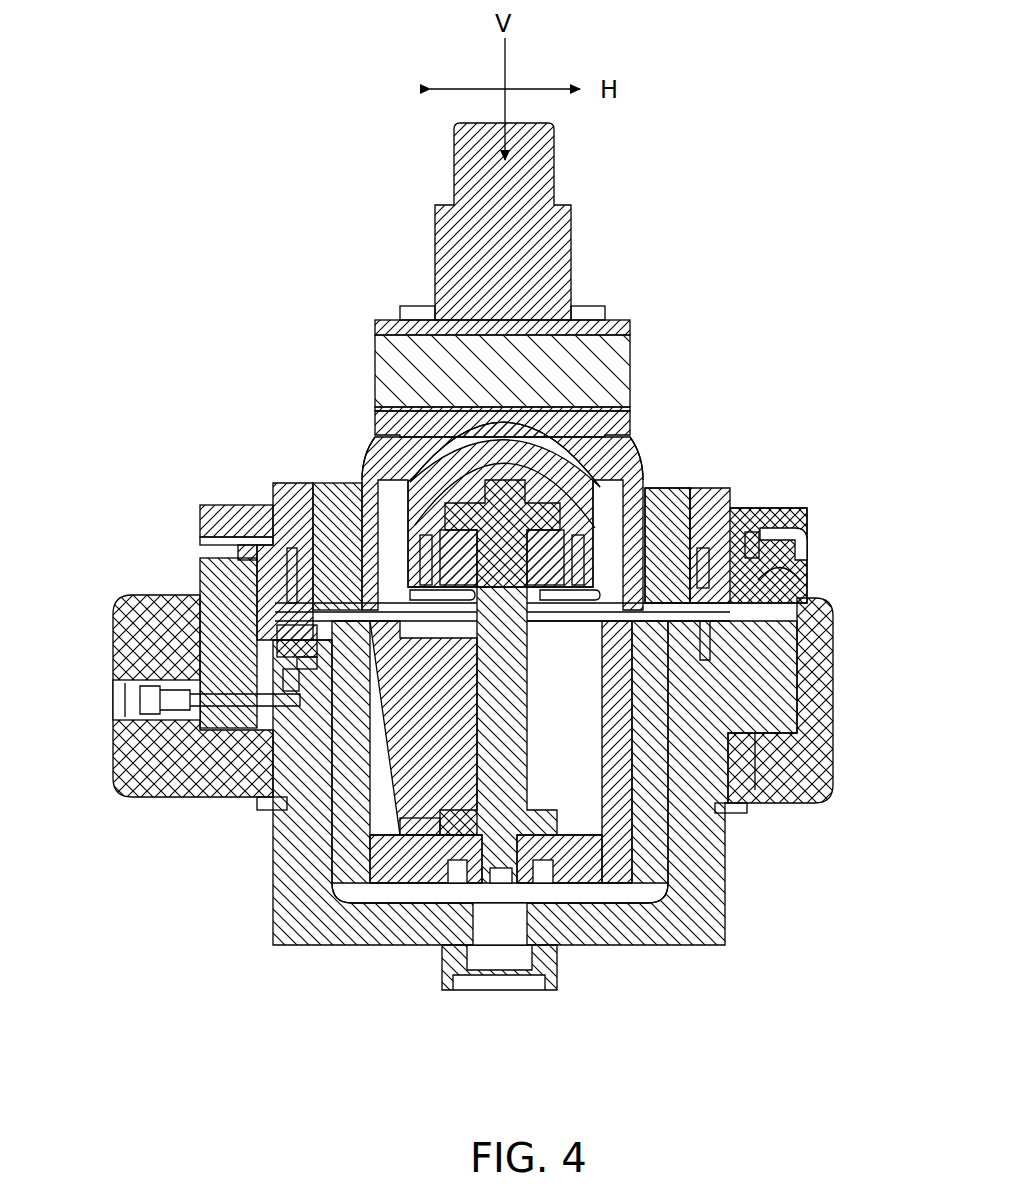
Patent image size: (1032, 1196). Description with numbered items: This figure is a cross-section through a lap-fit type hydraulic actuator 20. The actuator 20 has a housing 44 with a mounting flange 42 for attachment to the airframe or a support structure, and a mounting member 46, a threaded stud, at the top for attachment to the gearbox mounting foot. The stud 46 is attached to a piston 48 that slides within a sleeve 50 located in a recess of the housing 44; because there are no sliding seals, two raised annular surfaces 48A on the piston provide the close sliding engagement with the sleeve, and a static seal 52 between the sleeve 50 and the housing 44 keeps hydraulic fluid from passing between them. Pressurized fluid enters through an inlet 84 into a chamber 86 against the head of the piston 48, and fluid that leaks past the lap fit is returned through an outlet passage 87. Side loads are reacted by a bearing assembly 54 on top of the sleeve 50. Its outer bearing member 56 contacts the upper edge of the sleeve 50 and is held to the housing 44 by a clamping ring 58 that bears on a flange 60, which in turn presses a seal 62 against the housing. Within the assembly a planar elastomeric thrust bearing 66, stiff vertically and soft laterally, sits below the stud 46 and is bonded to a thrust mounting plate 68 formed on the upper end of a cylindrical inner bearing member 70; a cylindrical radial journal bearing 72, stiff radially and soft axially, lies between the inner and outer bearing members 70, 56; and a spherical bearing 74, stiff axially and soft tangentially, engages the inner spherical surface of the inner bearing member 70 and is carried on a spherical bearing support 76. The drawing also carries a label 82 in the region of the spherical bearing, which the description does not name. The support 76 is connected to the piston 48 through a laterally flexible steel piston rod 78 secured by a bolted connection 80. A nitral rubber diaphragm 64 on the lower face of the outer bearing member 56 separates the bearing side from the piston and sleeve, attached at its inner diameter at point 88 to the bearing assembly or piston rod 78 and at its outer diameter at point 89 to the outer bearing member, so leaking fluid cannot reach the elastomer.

The hydraulic ATM actuator 20 is at (678, 180).
The mounting flange 42 is at (172, 800).
The housing 44 is at (212, 590).
The mounting member 46 is at (545, 172).
The piston 48 is at (590, 885).
The raised annular surfaces 48A is at (243, 956).
The sleeve 50 is at (655, 878).
The static seal 52 is at (752, 806).
The bearing assembly 54 is at (725, 410).
The outer bearing member 56 is at (726, 500).
The clamping ring 58 is at (228, 510).
The flange 60 is at (792, 534).
The seal 62 is at (712, 590).
The diaphragm 64 is at (560, 614).
The thrust bearing 66 is at (605, 380).
The thrust mounting plate 68 is at (628, 425).
The inner bearing member 70 is at (642, 452).
The radial journal bearing 72 is at (676, 498).
The spherical bearing 74 is at (395, 432).
The spherical bearing support 76 is at (412, 352).
The piston rod 78 is at (368, 858).
The bolted connection 80 is at (462, 890).
The arch cavity 82 is at (400, 487).
The inlet 84 is at (502, 958).
The chamber 86 is at (473, 895).
The outlet passage 87 is at (132, 700).
The attachment point 88 is at (585, 562).
The attachment point 89 is at (790, 622).